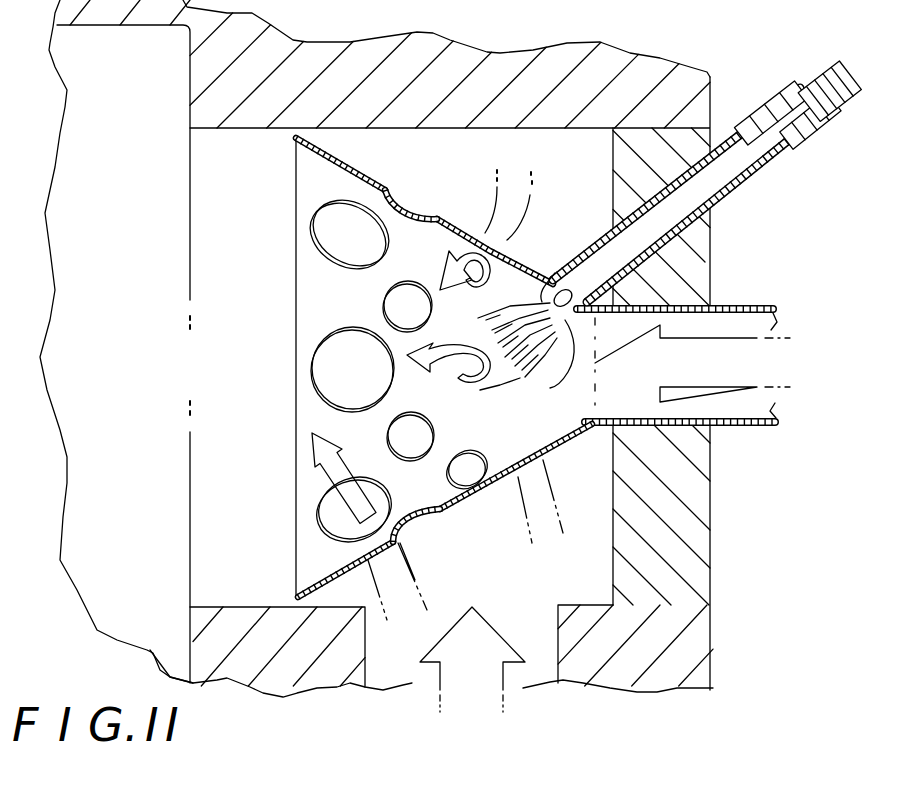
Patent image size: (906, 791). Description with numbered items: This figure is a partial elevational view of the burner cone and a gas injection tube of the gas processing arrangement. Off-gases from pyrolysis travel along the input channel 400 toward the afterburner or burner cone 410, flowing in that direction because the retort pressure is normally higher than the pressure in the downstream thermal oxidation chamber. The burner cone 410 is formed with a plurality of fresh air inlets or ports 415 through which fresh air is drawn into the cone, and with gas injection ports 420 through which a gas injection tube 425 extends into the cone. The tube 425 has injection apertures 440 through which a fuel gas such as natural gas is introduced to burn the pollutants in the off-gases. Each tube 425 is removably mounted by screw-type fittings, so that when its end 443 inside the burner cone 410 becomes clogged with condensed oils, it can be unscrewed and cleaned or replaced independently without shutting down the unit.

The input channel 400 is at (733, 320).
The burner cone 410 is at (317, 172).
The fresh air inlets 415 is at (417, 522).
The gas injection ports 420 is at (517, 388).
The gas injection tube 425 is at (742, 192).
The injection apertures 440 is at (490, 272).
The ends of the tubes 443 is at (448, 381).